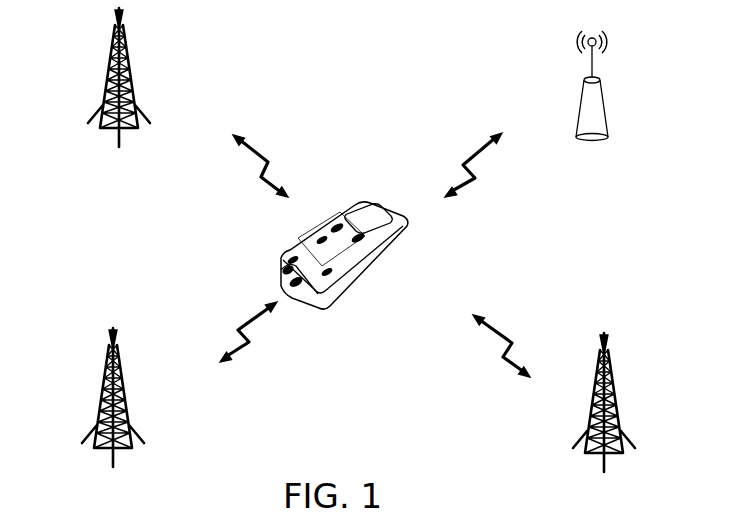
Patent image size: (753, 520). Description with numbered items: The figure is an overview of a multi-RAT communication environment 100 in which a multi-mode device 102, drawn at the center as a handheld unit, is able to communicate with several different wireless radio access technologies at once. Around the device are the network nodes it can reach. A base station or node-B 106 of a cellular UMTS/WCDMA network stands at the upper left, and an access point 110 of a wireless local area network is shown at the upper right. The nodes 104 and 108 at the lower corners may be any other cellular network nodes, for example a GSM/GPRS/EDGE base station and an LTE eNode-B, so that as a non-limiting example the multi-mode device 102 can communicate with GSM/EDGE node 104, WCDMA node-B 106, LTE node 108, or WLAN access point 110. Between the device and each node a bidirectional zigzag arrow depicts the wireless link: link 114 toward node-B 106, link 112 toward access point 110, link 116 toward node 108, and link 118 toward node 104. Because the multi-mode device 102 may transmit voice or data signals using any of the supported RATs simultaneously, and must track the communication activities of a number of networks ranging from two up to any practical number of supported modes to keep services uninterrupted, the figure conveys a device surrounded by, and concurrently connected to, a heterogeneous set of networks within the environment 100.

The multi-RAT communication environment 100 is at (350, 25).
The multi-mode device 102 is at (375, 270).
The cellular network node 104 is at (616, 403).
The base station or node-B 106 is at (128, 68).
The cellular network node 108 is at (124, 388).
The access point 110 is at (603, 106).
The wireless link 112 is at (476, 180).
The wireless link 114 is at (272, 168).
The wireless link 116 is at (250, 345).
The wireless link 118 is at (514, 348).